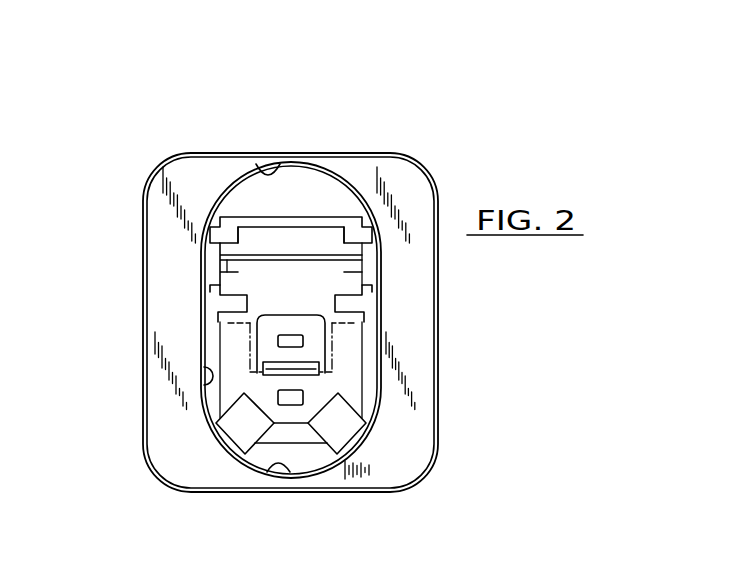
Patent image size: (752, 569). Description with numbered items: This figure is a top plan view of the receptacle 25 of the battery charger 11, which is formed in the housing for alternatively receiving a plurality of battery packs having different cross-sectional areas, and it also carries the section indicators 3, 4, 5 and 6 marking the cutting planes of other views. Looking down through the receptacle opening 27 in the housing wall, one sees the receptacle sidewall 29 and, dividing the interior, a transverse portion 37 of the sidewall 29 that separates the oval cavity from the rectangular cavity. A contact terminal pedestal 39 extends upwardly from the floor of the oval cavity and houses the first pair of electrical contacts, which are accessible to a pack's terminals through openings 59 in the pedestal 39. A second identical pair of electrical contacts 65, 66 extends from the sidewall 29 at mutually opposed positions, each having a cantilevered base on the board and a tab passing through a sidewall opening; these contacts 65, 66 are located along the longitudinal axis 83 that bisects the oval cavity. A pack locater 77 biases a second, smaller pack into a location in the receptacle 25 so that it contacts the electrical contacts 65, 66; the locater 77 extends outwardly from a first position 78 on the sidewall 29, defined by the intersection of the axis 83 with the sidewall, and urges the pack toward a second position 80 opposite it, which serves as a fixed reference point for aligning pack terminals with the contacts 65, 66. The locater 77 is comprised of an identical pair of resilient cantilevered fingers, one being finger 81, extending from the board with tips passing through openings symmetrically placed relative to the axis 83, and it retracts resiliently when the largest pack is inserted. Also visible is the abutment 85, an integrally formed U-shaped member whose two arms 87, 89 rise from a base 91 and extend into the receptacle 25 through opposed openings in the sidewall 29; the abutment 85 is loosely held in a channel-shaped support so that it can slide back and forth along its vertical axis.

The fuel injector / valve assembly 11 is at (426, 62).
The receptacle 25 is at (240, 273).
The opening 27 is at (250, 345).
The sidewall 29 is at (212, 366).
The transverse portion of sidewall 37 is at (218, 334).
The contact terminal pedestal 39 is at (311, 328).
The openings 59 is at (281, 331).
The electrical contact 65 is at (224, 303).
The electrical contact 66 is at (356, 303).
The pack locater 77 is at (314, 464).
The first position 78 is at (263, 470).
The second position 80 is at (278, 164).
The resilient cantilevered finger 81 is at (349, 428).
The longitudinal axis 83 is at (292, 273).
The abutment 85 is at (286, 211).
The arm 87 is at (231, 237).
The arm 89 is at (362, 232).
The base 91 is at (311, 240).
The section line 3- 3 is at (467, 296).
The section line 4- 4 is at (248, 377).
The section line 5- 5 is at (448, 169).
The section line 6- 6 is at (255, 535).